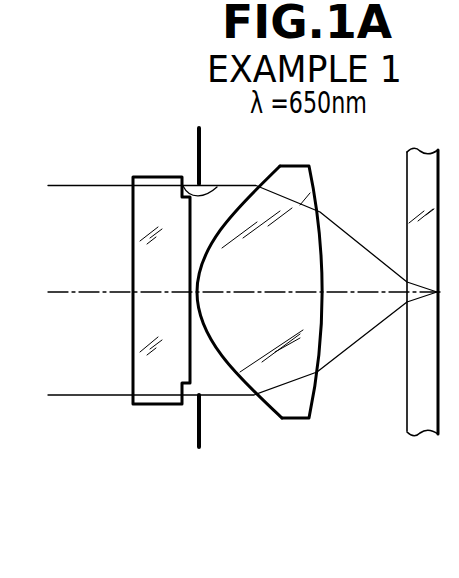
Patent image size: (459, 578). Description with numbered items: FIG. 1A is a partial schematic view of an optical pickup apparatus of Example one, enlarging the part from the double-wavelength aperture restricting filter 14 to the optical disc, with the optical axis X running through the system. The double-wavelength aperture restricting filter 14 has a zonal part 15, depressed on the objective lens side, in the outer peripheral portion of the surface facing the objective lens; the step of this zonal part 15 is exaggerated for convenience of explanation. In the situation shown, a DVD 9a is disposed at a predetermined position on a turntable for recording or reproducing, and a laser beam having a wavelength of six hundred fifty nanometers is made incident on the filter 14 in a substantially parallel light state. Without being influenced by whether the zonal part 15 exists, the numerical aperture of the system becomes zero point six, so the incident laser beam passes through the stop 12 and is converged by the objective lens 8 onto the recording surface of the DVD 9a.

The objective lens 8 is at (298, 406).
The DVD 9a is at (420, 408).
The stop 12 is at (201, 422).
The double-wavelength aperture restricting filter 14 is at (148, 401).
The zonal part 15 is at (217, 187).
The optical axis X is at (99, 294).